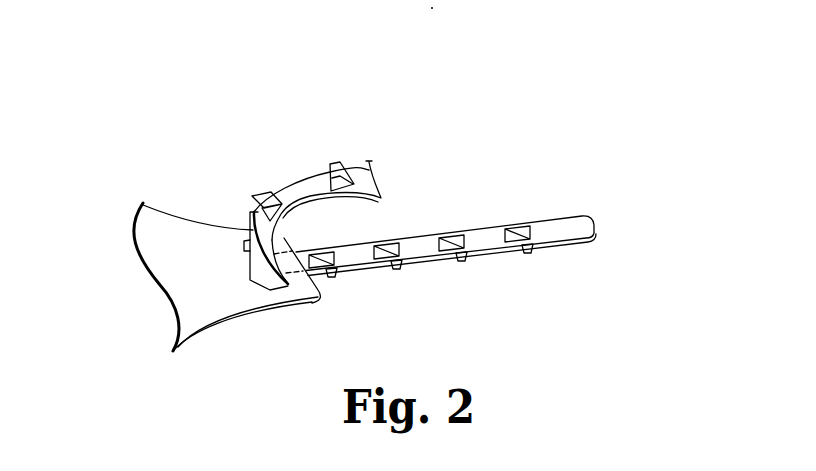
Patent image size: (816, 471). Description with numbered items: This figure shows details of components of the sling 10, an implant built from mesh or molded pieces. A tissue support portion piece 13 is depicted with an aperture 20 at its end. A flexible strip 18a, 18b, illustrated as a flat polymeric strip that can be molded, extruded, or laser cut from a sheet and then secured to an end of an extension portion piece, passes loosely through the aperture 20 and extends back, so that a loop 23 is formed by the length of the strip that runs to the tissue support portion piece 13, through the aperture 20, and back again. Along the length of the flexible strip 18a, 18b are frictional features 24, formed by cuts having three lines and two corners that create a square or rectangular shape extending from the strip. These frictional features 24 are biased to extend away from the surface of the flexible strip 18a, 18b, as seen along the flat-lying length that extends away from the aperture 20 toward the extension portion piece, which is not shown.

The elongated sling 10 is at (472, 115).
The tissue support portion piece 13 is at (177, 195).
The flexible strip 18a is at (595, 226).
The flexible strip 18b is at (596, 228).
The aperture 20 is at (268, 290).
The loop 23 is at (354, 140).
The frictional features 24 is at (258, 193).